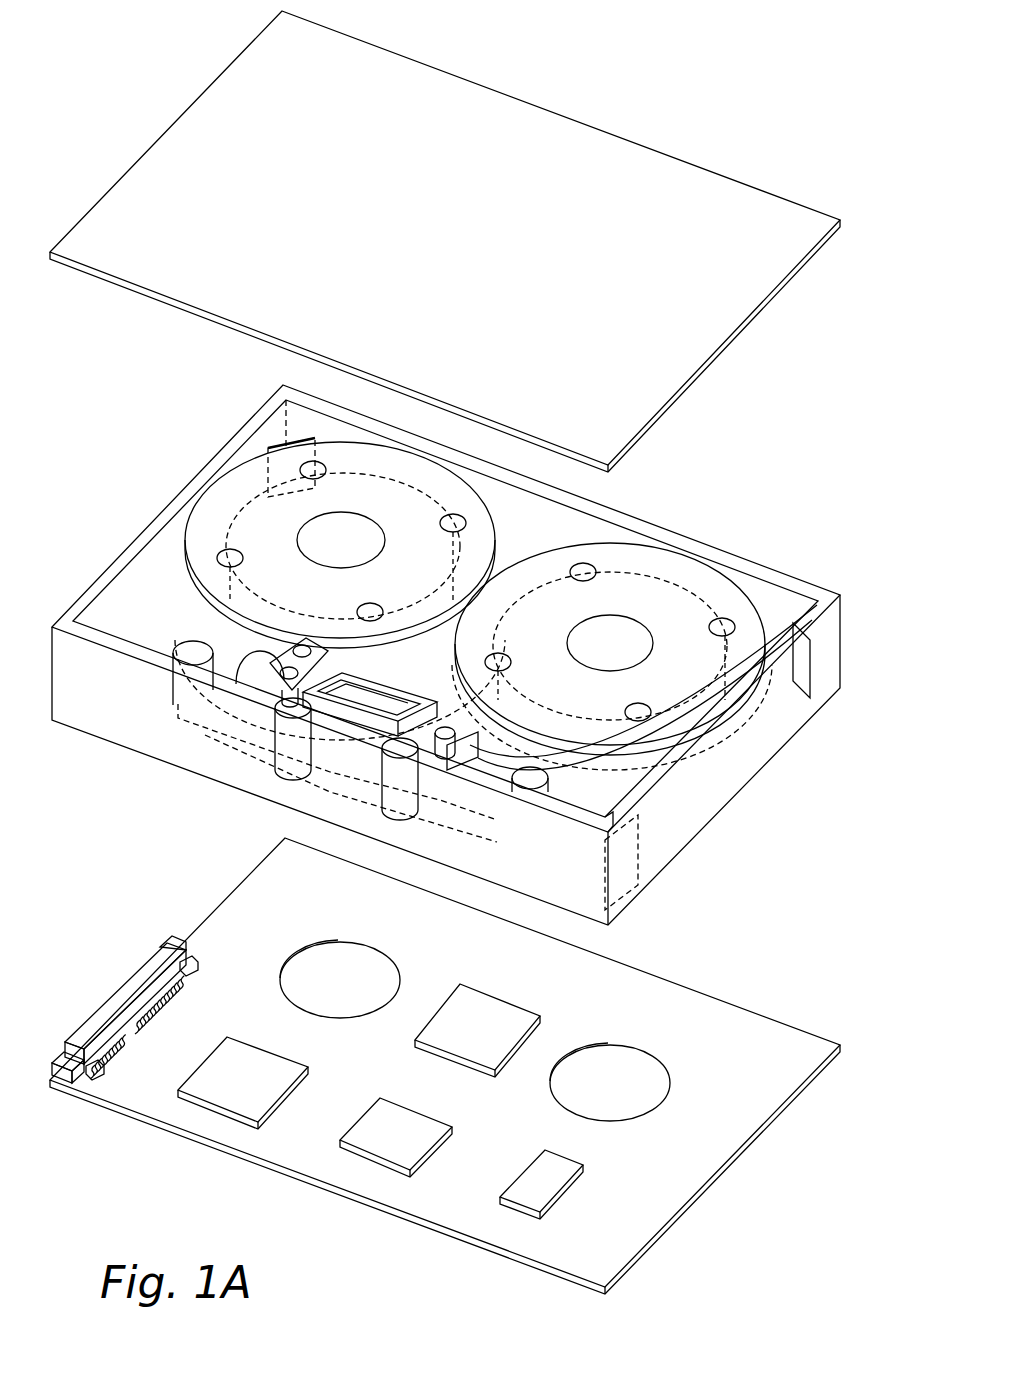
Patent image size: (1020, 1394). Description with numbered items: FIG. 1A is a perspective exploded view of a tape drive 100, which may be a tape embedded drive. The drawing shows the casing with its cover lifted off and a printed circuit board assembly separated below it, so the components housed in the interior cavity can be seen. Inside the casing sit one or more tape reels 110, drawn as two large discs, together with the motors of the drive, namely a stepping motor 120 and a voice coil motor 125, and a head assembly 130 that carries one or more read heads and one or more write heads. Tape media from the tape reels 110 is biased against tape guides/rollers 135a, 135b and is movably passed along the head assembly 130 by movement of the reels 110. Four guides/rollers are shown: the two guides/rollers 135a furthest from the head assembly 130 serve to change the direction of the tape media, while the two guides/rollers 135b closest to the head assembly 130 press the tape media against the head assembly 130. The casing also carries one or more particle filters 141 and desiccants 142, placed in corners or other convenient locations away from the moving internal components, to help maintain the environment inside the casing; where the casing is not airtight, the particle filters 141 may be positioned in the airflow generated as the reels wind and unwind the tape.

The tape drive 100 is at (146, 32).
The tape reels 110 is at (618, 556).
The stepping motor 120 is at (257, 667).
The voice coil motor 125 is at (352, 683).
The head assembly 130 is at (367, 722).
The tape guides/rollers 135a is at (193, 648).
The tape guides/rollers 135b is at (287, 745).
The particle filters 141 is at (812, 668).
The desiccants 142 is at (628, 854).